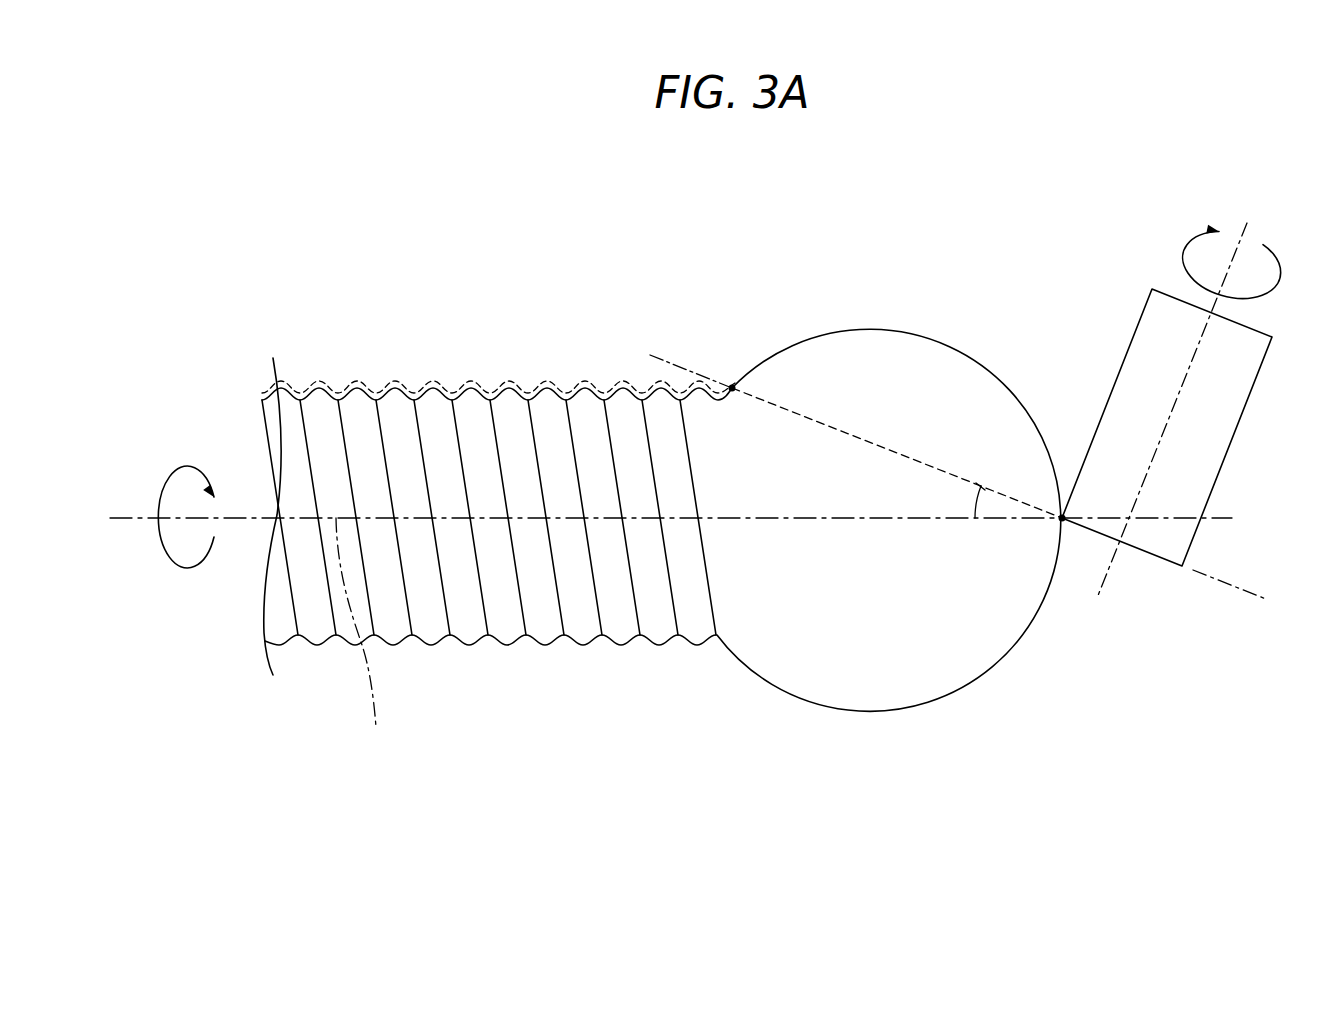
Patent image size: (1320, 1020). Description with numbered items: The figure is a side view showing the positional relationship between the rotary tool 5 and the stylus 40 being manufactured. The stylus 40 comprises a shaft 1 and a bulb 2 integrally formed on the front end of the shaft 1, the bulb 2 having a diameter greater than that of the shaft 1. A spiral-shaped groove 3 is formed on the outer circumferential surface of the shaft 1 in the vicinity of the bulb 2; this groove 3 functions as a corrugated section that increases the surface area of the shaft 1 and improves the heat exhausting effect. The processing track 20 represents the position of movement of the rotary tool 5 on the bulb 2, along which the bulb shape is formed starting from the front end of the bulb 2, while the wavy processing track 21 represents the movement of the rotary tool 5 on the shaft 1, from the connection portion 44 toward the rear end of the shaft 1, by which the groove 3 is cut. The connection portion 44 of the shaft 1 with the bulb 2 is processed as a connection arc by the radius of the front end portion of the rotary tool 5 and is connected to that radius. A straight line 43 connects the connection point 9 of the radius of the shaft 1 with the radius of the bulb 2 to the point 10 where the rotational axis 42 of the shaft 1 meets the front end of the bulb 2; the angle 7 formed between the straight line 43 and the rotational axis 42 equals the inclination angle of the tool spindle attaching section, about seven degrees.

The shaft 1 is at (578, 594).
The bulb 2 is at (890, 346).
The spiral-shaped groove 3 is at (430, 622).
The rotary tool 5 is at (1107, 406).
The angle 7 is at (980, 500).
The connection point 9 is at (732, 386).
The point 10 is at (1062, 515).
The processing track 20 is at (811, 405).
The wavy processing track 21 is at (548, 372).
The stylus 40 is at (361, 286).
The rotational axis 42 is at (365, 641).
The straight line 43 is at (1254, 592).
The connection portion 44 is at (733, 561).